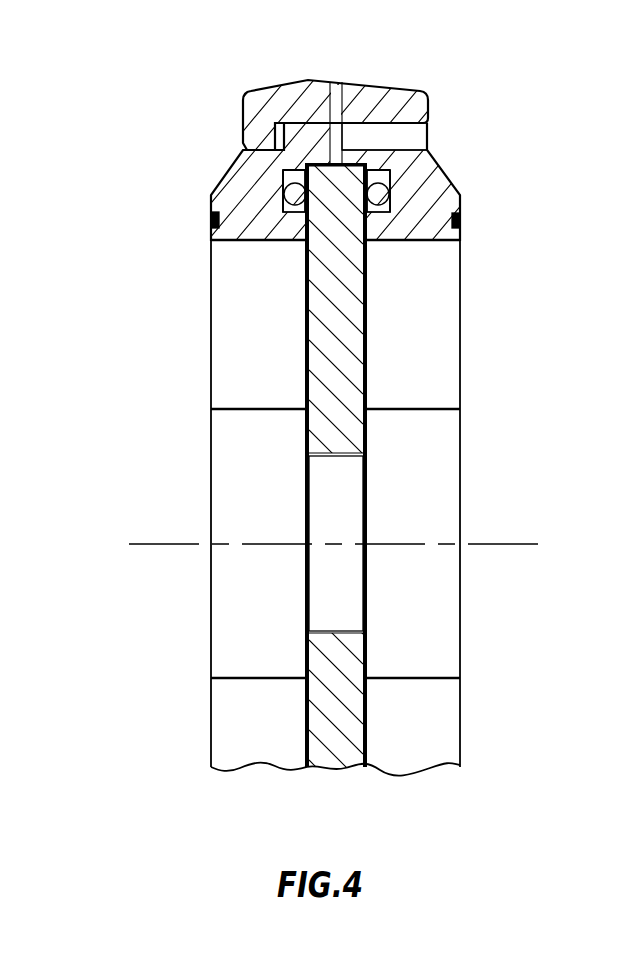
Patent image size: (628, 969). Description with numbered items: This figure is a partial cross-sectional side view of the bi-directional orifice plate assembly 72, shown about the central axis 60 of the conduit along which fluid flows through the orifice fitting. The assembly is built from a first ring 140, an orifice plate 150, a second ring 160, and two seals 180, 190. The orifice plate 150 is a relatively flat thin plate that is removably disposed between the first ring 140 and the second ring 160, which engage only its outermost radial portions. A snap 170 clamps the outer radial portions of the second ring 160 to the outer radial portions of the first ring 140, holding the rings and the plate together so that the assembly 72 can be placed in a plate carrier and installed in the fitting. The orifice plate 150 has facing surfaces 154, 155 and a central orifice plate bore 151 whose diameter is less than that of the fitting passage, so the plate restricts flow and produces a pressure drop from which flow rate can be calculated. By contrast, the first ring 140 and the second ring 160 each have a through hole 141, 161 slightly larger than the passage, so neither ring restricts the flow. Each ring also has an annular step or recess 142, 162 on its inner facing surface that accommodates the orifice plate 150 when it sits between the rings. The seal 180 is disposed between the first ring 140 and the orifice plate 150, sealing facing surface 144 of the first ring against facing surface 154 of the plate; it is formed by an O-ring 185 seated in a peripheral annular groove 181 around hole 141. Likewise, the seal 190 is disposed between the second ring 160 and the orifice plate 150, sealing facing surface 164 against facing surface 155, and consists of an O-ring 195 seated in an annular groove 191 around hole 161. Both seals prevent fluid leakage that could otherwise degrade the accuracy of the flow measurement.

The central axis 60 is at (500, 543).
The bi-directional orifice plate assembly 72 is at (155, 95).
The first ring 140 is at (230, 755).
The through hole 141 is at (250, 618).
The annular step or recess 142 is at (309, 693).
The facing surface 144 is at (283, 242).
The orifice plate 150 is at (335, 753).
The orifice plate bore 151 is at (327, 508).
The facing surface 154 is at (311, 240).
The facing surface 155 is at (361, 235).
The second ring 160 is at (438, 740).
The through hole 161 is at (437, 615).
The annular step or recess 162 is at (362, 690).
The facing surface 164 is at (368, 224).
The snap 170 is at (395, 93).
The seal 180 is at (283, 192).
The annular groove 181 is at (283, 175).
The O-ring 185 is at (283, 200).
The seal 190 is at (390, 192).
The annular groove 191 is at (398, 177).
The O-ring 195 is at (390, 198).